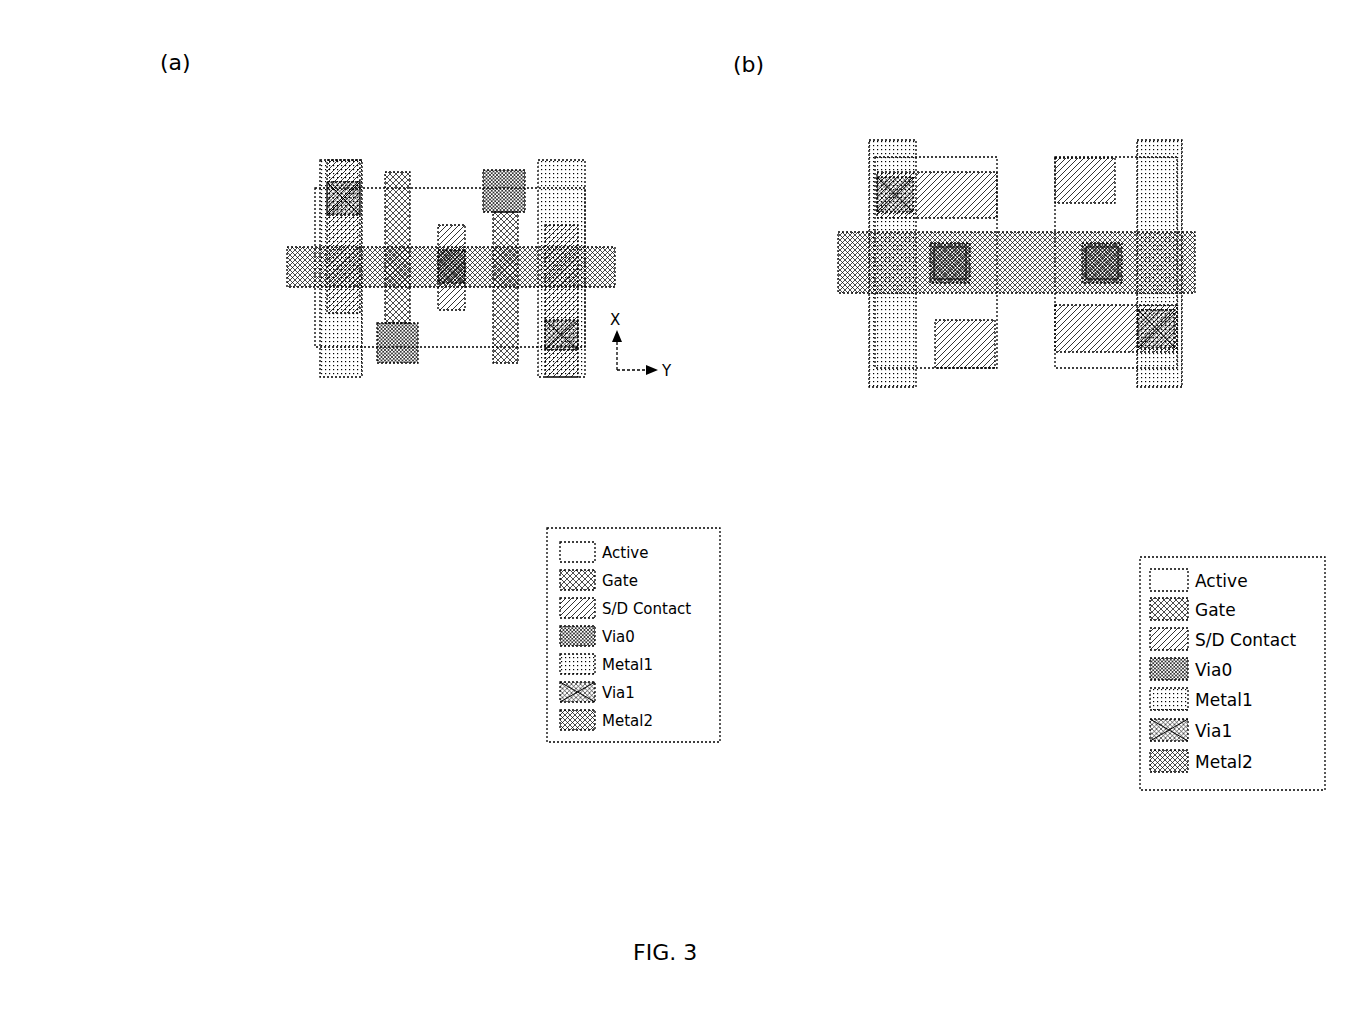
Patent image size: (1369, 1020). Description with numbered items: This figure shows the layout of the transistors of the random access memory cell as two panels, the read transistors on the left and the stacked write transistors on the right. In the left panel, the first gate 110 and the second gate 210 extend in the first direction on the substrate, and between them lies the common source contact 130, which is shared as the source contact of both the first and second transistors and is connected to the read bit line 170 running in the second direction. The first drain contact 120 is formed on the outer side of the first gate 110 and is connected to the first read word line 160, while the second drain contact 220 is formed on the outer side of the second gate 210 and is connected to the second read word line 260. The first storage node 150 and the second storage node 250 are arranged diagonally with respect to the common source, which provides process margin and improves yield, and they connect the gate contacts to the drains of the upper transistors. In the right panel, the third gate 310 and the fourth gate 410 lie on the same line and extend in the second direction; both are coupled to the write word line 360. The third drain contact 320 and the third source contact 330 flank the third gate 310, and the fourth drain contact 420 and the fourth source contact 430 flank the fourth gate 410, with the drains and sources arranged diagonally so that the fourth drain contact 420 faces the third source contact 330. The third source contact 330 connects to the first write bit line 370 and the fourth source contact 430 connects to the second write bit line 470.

The first gate 110 is at (397, 172).
The first drain contact 120 is at (341, 235).
The common source contact 130 is at (450, 312).
The first storage node 150 is at (377, 349).
The first read word line 160 is at (322, 361).
The read bit line 170 is at (288, 267).
The second gate 210 is at (505, 364).
The second drain contact 220 is at (565, 238).
The second storage node 250 is at (490, 181).
The second read word line 260 is at (583, 360).
The third gate 310 is at (922, 268).
The third drain contact 320 is at (968, 372).
The third source contact 330 is at (954, 167).
The write word line 360 is at (1022, 292).
The first write bit line 370 is at (890, 349).
The fourth gate 410 is at (1125, 267).
The fourth drain contact 420 is at (1085, 155).
The fourth source contact 430 is at (1096, 372).
The second write bit line 470 is at (1180, 378).